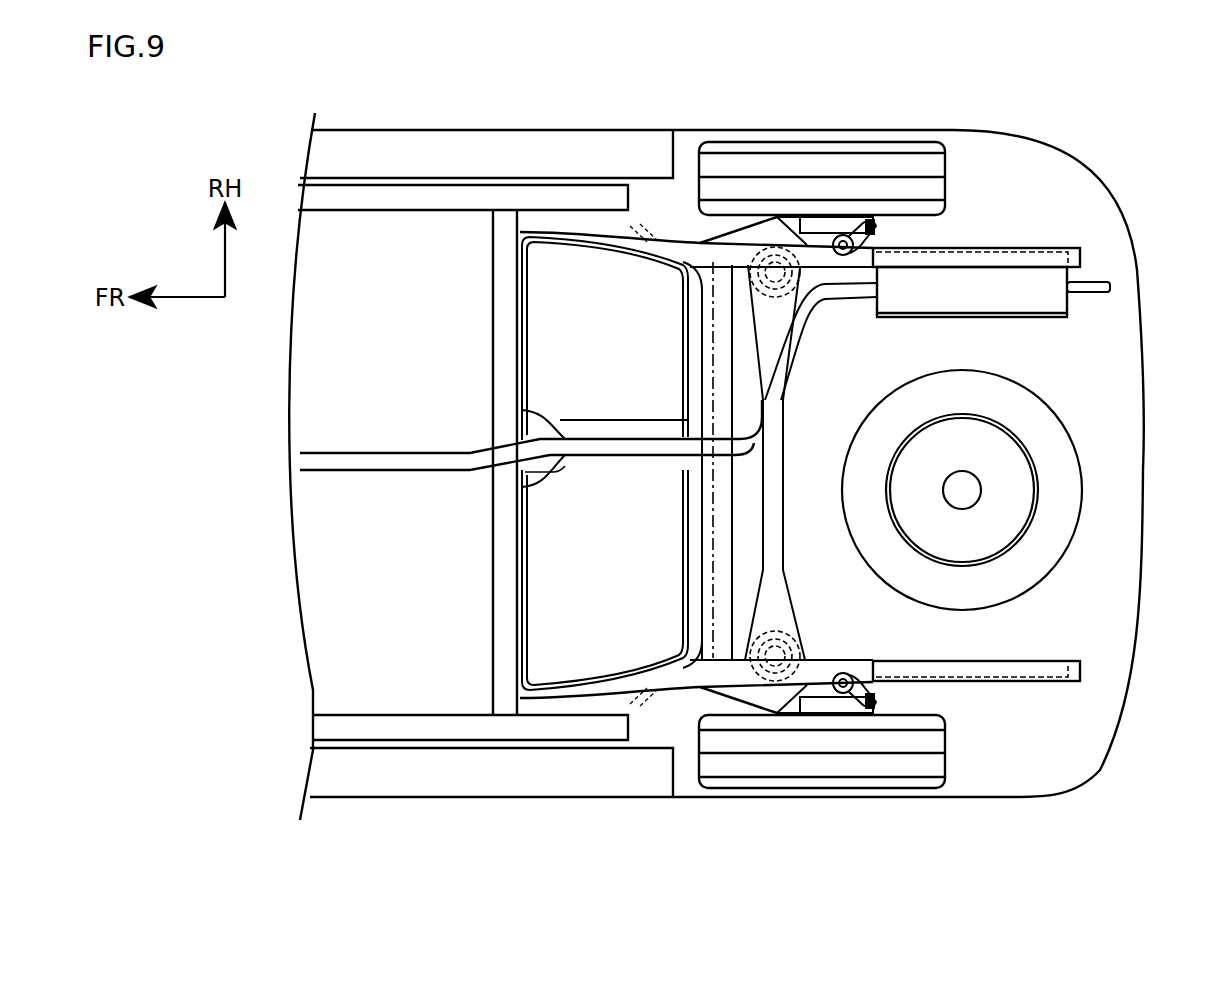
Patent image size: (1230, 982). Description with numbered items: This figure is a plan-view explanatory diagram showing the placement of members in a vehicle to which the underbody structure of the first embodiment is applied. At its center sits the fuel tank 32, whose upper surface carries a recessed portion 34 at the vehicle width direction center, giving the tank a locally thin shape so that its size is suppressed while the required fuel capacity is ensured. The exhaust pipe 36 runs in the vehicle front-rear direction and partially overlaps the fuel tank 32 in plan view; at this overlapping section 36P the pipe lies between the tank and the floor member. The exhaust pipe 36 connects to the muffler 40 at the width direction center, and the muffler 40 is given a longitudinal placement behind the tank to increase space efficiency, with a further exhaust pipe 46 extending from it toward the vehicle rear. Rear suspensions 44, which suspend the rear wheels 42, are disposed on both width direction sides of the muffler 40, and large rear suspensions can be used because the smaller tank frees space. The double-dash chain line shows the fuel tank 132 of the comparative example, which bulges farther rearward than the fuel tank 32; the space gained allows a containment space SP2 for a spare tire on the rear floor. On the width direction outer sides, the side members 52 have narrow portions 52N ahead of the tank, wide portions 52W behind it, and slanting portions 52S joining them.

The fuel tank 32 is at (520, 302).
The recessed portion 34 is at (622, 428).
The exhaust pipe 36 is at (363, 456).
The overlapping section 36P is at (609, 450).
The muffler 40 is at (1048, 318).
The rear wheels 42 is at (946, 168).
The rear suspensions 44 is at (883, 229).
The exhaust pipe 46 is at (1100, 282).
The side members 52 is at (1075, 247).
The narrow portions 52N is at (1037, 247).
The slanting portions 52S is at (668, 235).
The wide portions 52W is at (567, 206).
The fuel tank of the comparative example 132 is at (716, 583).
The containment space for a spare tire SP2 is at (1060, 433).